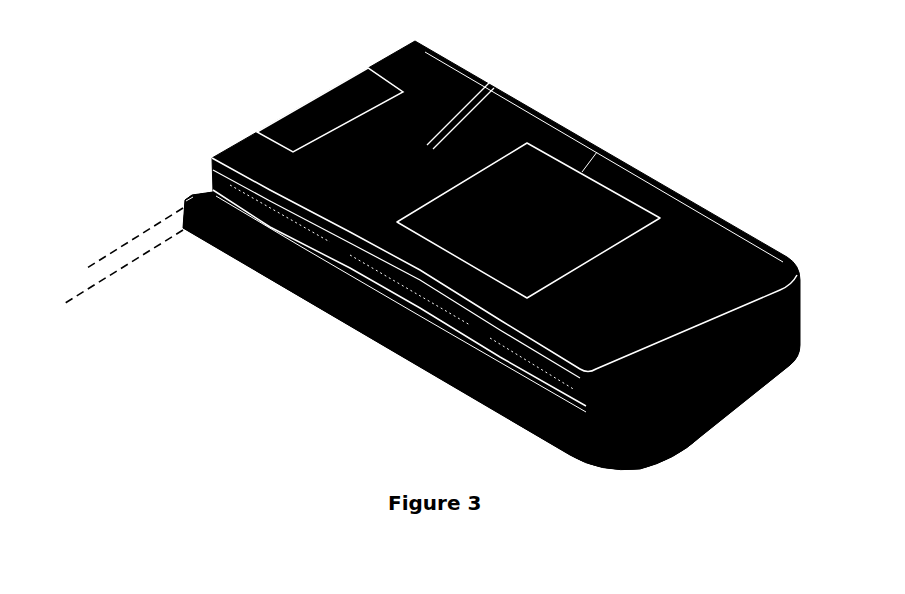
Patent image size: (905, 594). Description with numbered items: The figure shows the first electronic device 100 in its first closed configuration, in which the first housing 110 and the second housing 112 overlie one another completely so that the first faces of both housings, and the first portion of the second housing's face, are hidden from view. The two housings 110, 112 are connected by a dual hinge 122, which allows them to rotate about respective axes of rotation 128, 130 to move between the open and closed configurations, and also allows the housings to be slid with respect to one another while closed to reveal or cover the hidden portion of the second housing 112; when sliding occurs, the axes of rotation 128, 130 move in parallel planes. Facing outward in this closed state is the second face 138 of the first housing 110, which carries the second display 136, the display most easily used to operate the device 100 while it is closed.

The first electronic device 100 is at (706, 92).
The first housing 110 is at (442, 378).
The second housing 112 is at (513, 422).
The dual hinge 122 is at (323, 98).
The axis of rotation 128 is at (156, 222).
The axis of rotation 130 is at (107, 277).
The second display 136 is at (598, 150).
The second face 138 is at (490, 83).